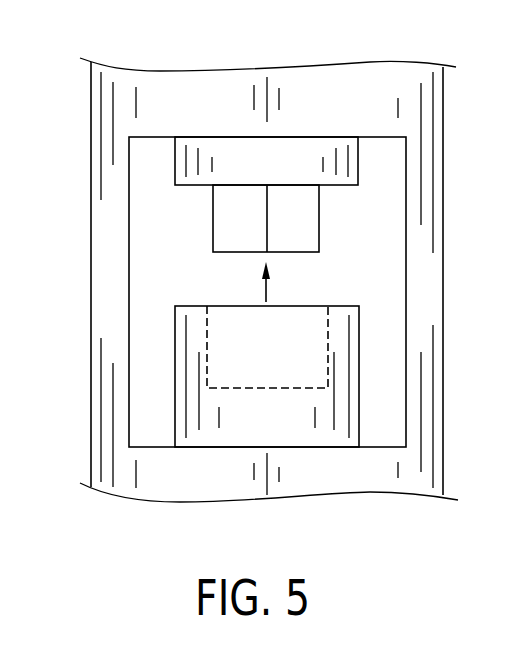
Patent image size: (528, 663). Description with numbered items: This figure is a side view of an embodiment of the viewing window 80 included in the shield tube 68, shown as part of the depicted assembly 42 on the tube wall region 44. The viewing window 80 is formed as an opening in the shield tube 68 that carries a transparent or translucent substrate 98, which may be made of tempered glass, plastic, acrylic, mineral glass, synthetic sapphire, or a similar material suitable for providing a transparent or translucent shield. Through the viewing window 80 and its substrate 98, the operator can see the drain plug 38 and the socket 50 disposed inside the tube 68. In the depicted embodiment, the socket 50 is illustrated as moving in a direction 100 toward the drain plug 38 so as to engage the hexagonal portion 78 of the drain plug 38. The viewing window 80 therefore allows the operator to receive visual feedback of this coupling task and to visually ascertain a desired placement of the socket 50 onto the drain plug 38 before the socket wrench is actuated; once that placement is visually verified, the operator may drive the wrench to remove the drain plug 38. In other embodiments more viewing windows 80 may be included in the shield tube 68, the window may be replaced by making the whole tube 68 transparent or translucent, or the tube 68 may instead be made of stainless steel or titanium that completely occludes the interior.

The device 42 is at (387, 520).
The substrate 44 is at (457, 326).
The shield tube 68 is at (426, 192).
The viewing window 80 is at (129, 225).
The substrate 98 is at (150, 290).
The drain plug 38 is at (259, 173).
The hexagonal portion 78 is at (279, 230).
The direction 100 is at (266, 287).
The socket 50 is at (254, 428).